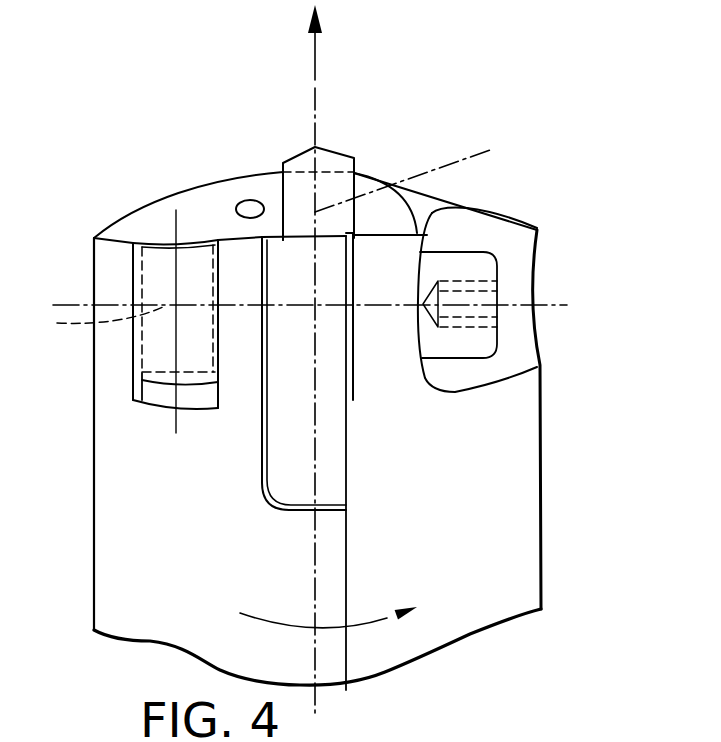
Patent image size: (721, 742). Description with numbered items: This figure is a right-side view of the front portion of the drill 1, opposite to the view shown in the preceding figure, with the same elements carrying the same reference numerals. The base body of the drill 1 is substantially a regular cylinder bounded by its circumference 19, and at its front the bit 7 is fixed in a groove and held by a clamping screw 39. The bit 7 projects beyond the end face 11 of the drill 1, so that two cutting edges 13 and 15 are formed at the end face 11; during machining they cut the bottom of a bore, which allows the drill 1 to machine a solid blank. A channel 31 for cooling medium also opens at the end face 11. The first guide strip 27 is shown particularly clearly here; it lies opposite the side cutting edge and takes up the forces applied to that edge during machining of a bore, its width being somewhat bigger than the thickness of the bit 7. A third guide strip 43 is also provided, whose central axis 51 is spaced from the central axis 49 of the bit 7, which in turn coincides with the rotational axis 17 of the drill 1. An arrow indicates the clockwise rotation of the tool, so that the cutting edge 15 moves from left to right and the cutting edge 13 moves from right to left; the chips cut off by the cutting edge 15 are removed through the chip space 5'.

The drill 1 is at (582, 420).
The chip space 5' is at (334, 461).
The bit 7 is at (330, 160).
The end face 11 is at (160, 225).
The cutting edge 13 is at (281, 163).
The cutting edge 15 is at (354, 158).
The rotational axis 17 is at (318, 670).
The circumference 19 is at (545, 555).
The first guide strip 27 is at (308, 473).
The channel 31 is at (250, 207).
The clamping screw 39 is at (480, 272).
The third guide strip 43 is at (163, 345).
The central axis of the bit 49 is at (421, 171).
The central axis of the third guide strip 51 is at (92, 325).